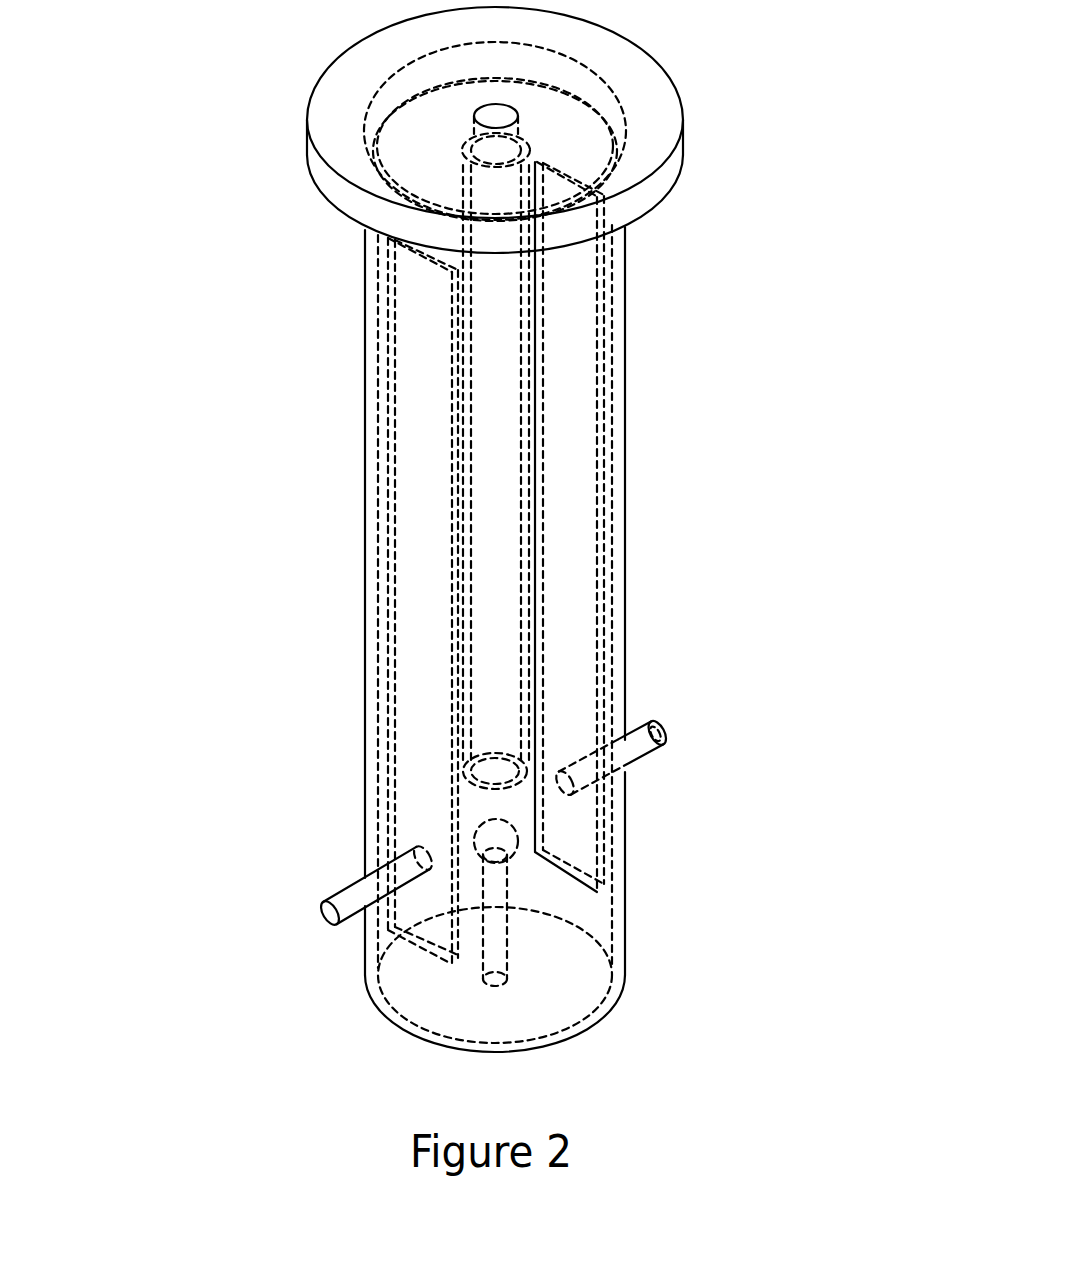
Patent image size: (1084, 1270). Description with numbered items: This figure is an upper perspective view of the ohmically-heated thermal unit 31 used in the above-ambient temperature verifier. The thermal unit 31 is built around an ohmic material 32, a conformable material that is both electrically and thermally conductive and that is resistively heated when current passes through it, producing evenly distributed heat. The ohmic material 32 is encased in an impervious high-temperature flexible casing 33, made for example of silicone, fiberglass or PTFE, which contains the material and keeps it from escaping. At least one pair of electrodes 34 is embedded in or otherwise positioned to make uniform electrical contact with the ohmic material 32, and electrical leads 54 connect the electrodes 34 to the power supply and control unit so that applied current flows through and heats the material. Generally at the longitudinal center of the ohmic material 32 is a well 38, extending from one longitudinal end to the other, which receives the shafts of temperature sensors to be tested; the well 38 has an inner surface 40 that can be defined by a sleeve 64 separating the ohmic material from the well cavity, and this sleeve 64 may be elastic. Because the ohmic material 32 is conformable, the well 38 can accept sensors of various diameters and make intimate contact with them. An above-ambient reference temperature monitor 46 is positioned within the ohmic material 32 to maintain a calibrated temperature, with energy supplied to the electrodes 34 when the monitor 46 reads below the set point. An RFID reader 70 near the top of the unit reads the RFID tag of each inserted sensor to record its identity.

The thermal unit 31 is at (247, 87).
The ohmic material 32 is at (583, 912).
The flexible casing 33 is at (626, 372).
The electrodes 34 is at (565, 442).
The well 38 is at (488, 695).
The inner surface 40 is at (523, 585).
The above-ambient reference temperature monitor 46 is at (503, 838).
The electrical leads 54 is at (638, 745).
The sleeve 64 is at (463, 332).
The RFID reader 70 is at (667, 181).